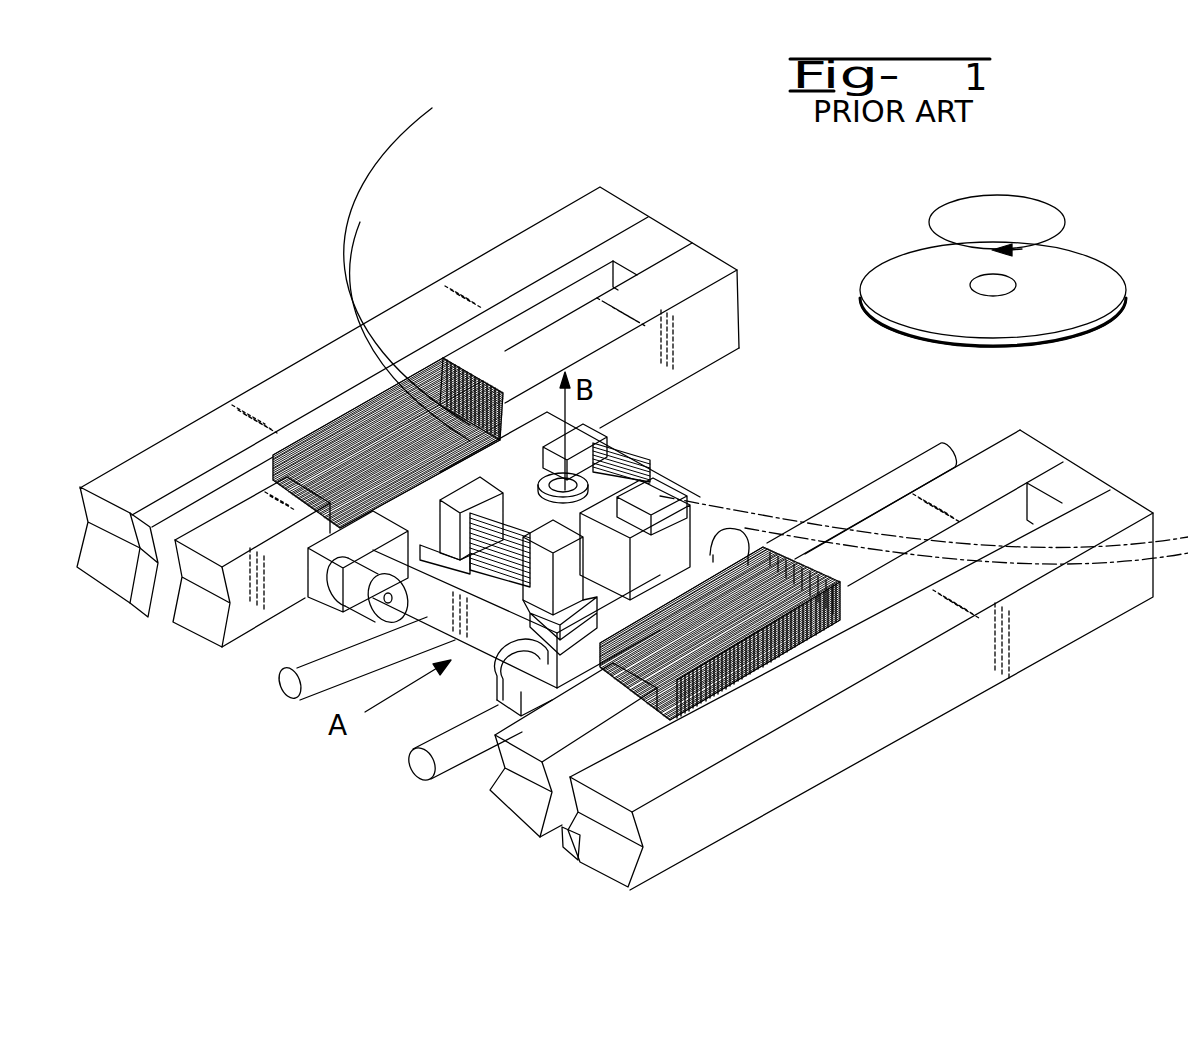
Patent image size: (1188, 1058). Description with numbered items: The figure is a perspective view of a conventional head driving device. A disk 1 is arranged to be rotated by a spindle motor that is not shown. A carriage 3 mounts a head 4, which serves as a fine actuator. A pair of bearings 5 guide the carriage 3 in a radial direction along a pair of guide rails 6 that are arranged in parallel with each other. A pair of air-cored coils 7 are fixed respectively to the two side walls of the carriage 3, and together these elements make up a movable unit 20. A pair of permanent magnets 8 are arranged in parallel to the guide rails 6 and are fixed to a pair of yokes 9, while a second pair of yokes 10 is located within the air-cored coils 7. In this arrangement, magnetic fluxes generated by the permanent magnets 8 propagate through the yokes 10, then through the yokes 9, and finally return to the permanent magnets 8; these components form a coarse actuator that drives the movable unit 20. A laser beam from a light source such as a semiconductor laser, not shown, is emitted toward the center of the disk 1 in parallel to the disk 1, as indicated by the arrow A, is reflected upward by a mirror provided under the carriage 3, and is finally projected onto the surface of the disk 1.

The disk 1 is at (400, 125).
The carriage 3 is at (445, 618).
The head 4 is at (652, 432).
The bearings 5 is at (350, 607).
The guide rails 6 is at (287, 683).
The air-cored coils 7 is at (493, 390).
The permanent magnets 8 is at (147, 592).
The yokes 9 is at (122, 573).
The second pair of yokes 10 is at (203, 623).
The movable unit 20 is at (720, 492).